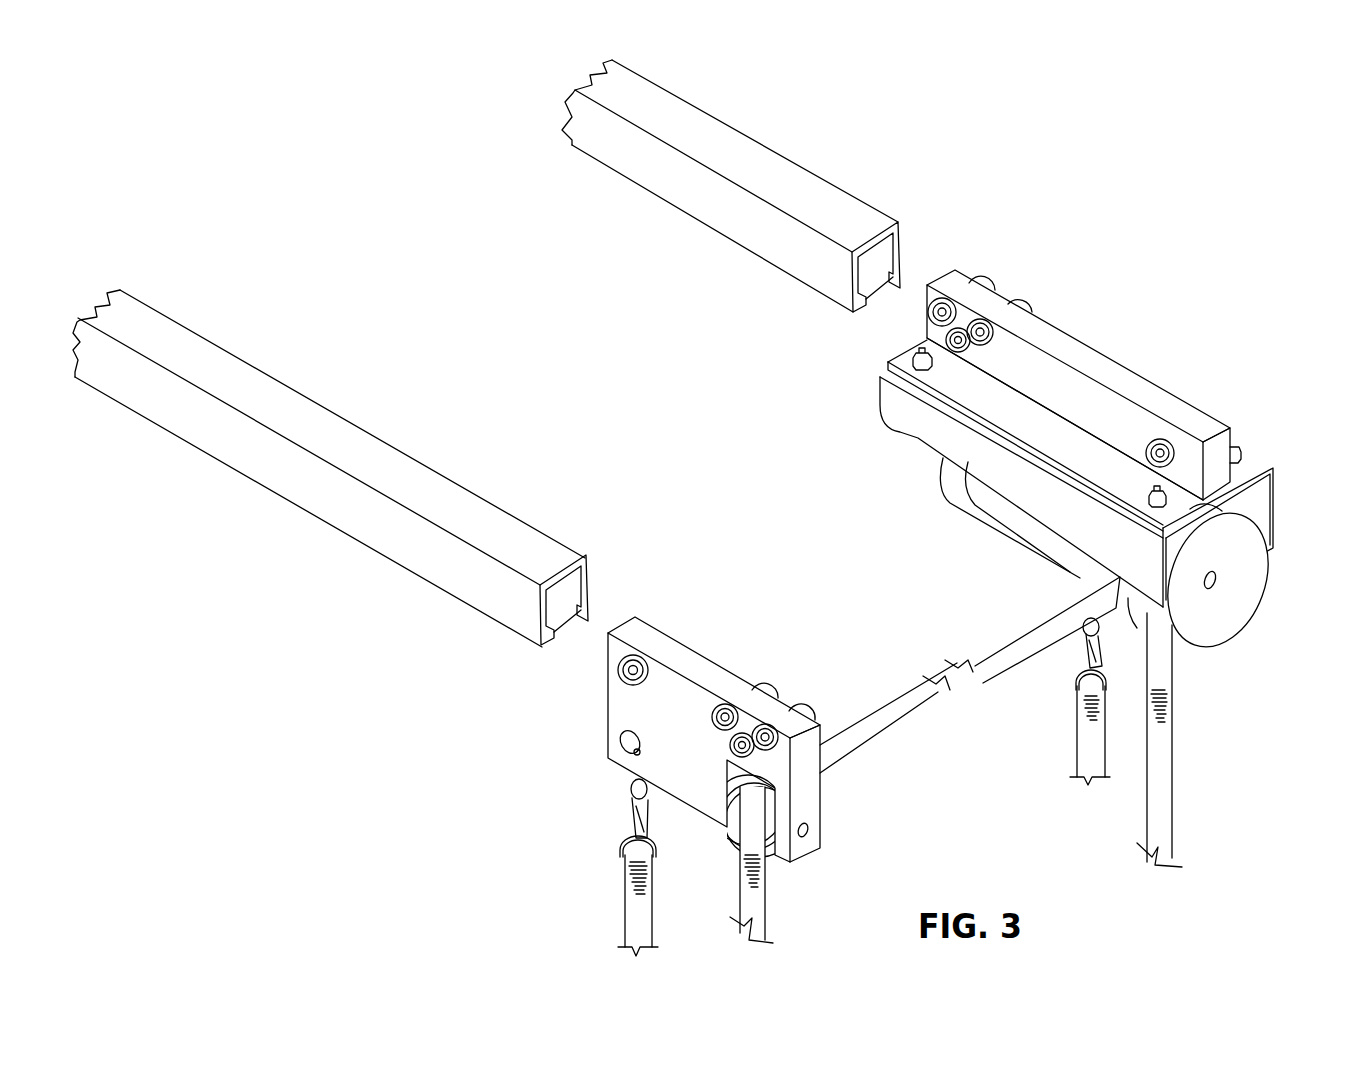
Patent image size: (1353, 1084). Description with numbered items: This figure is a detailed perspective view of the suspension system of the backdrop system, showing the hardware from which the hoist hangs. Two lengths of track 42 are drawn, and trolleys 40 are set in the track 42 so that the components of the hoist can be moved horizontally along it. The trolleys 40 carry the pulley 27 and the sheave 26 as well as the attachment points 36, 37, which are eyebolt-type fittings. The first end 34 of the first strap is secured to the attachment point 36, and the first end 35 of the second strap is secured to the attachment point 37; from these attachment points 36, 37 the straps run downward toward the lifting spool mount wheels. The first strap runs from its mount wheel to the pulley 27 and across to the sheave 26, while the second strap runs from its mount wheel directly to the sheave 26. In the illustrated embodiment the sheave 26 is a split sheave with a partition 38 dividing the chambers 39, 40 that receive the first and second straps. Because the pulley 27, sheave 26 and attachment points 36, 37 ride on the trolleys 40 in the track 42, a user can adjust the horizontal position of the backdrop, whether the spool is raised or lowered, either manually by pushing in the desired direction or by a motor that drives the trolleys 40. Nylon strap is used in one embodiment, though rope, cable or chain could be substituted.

The sheave 26 is at (1250, 594).
The pulley 27 is at (768, 845).
The first end of strap 34 is at (628, 887).
The first end of strap 35 is at (1087, 748).
The attachment point 36 is at (625, 797).
The attachment point 37 is at (1078, 638).
The partition 38 is at (1137, 625).
The chamber 39 is at (1110, 608).
The trolley 40 is at (1113, 373).
The track 42 is at (830, 200).